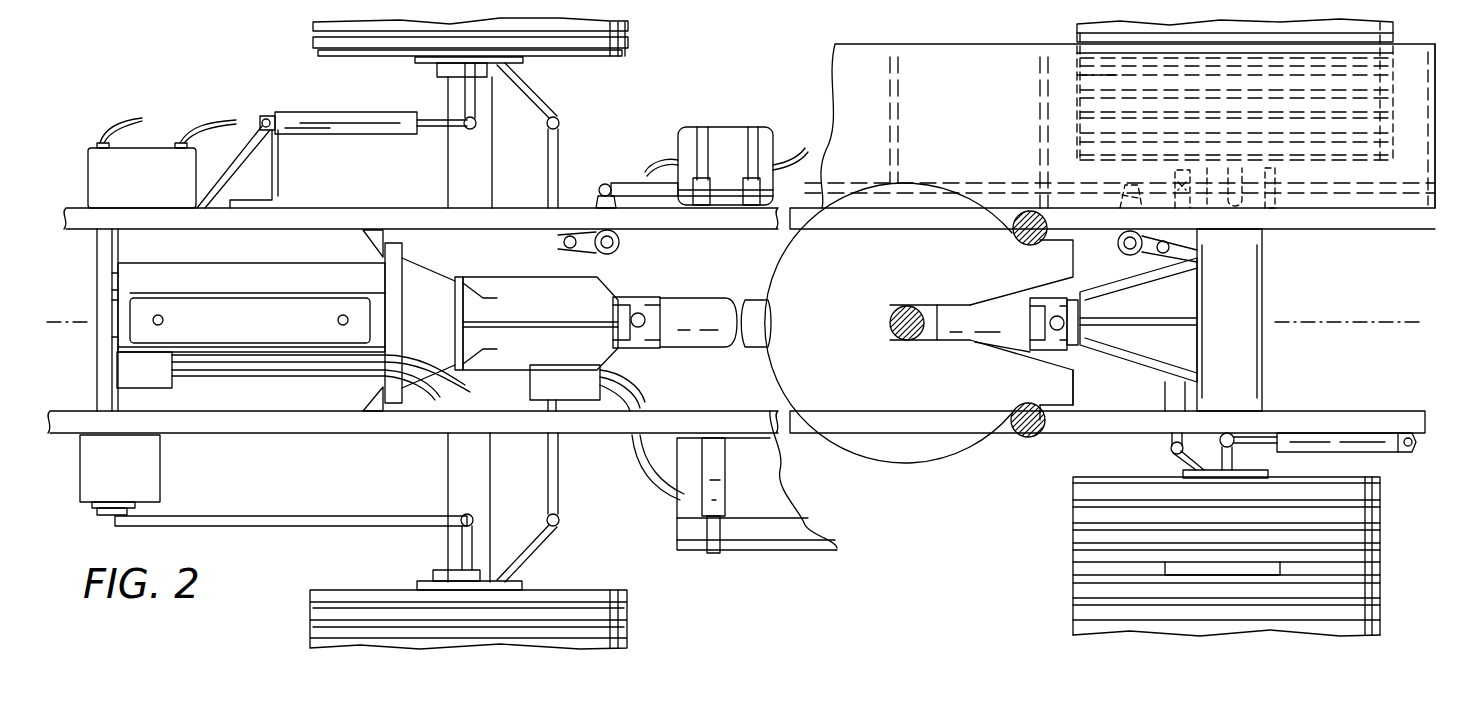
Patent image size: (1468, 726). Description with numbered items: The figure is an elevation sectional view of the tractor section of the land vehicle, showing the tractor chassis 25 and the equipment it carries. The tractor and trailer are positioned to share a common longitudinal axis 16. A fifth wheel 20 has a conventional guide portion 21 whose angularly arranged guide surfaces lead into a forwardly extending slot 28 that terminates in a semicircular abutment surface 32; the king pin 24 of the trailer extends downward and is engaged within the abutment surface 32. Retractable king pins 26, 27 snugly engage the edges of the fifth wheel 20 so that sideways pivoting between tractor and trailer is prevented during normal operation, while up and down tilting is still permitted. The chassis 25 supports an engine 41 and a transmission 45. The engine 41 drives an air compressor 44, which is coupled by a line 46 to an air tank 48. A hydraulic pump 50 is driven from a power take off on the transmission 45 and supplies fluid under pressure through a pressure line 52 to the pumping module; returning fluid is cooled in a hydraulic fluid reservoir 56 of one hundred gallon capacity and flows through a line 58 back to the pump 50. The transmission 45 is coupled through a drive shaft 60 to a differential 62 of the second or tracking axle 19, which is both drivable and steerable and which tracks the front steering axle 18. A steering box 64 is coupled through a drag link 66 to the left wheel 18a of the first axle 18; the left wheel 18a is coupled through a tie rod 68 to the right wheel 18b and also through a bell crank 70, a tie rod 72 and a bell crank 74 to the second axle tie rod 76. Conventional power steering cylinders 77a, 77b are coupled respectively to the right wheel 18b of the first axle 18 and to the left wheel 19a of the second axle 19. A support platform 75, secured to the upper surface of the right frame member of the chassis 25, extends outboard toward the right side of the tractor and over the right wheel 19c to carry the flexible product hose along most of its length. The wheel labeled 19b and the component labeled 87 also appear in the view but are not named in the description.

The common longitudinal axis 16 is at (50, 318).
The front steering axle 18 is at (478, 482).
The left wheel 18a is at (415, 582).
The right wheel 18b is at (528, 66).
The second or tracking axle 19 is at (1265, 205).
The left wheel 19a is at (1275, 485).
The rear wheel bracket 19b is at (1280, 170).
The right wheel 19c is at (1080, 78).
The fifth wheel 20 is at (922, 462).
The guide portion 21 is at (1030, 366).
The king pin 24 is at (893, 318).
The chassis 25 is at (1328, 243).
The retractable king pin 26 is at (1012, 228).
The retractable king pin 27 is at (1024, 438).
The forwardly extending slot 28 is at (948, 297).
The semicircular abutment surface 32 is at (905, 340).
The engine 41 is at (115, 238).
The air compressor 44 is at (170, 386).
The transmission 45 is at (560, 282).
The line 46 is at (412, 362).
The air tank 48 is at (722, 130).
The hydraulic pump 50 is at (536, 368).
The pressure line 52 is at (640, 395).
The hydraulic fluid reservoir 56 is at (740, 560).
The line 58 is at (650, 480).
The drive shaft 60 is at (1060, 298).
The differential 62 is at (1115, 362).
The steering box 64 is at (160, 473).
The drag link 66 is at (248, 516).
The tie rod 68 is at (552, 250).
The bell crank 70 is at (600, 192).
The tie rod 72 is at (1003, 185).
The bell crank 74 is at (1138, 203).
The support platform 75 is at (1413, 194).
The second axle tie rod 76 is at (1178, 386).
The power steering cylinder 77a is at (378, 116).
The power steering cylinder 77b is at (1372, 432).
The battery 87 is at (160, 196).